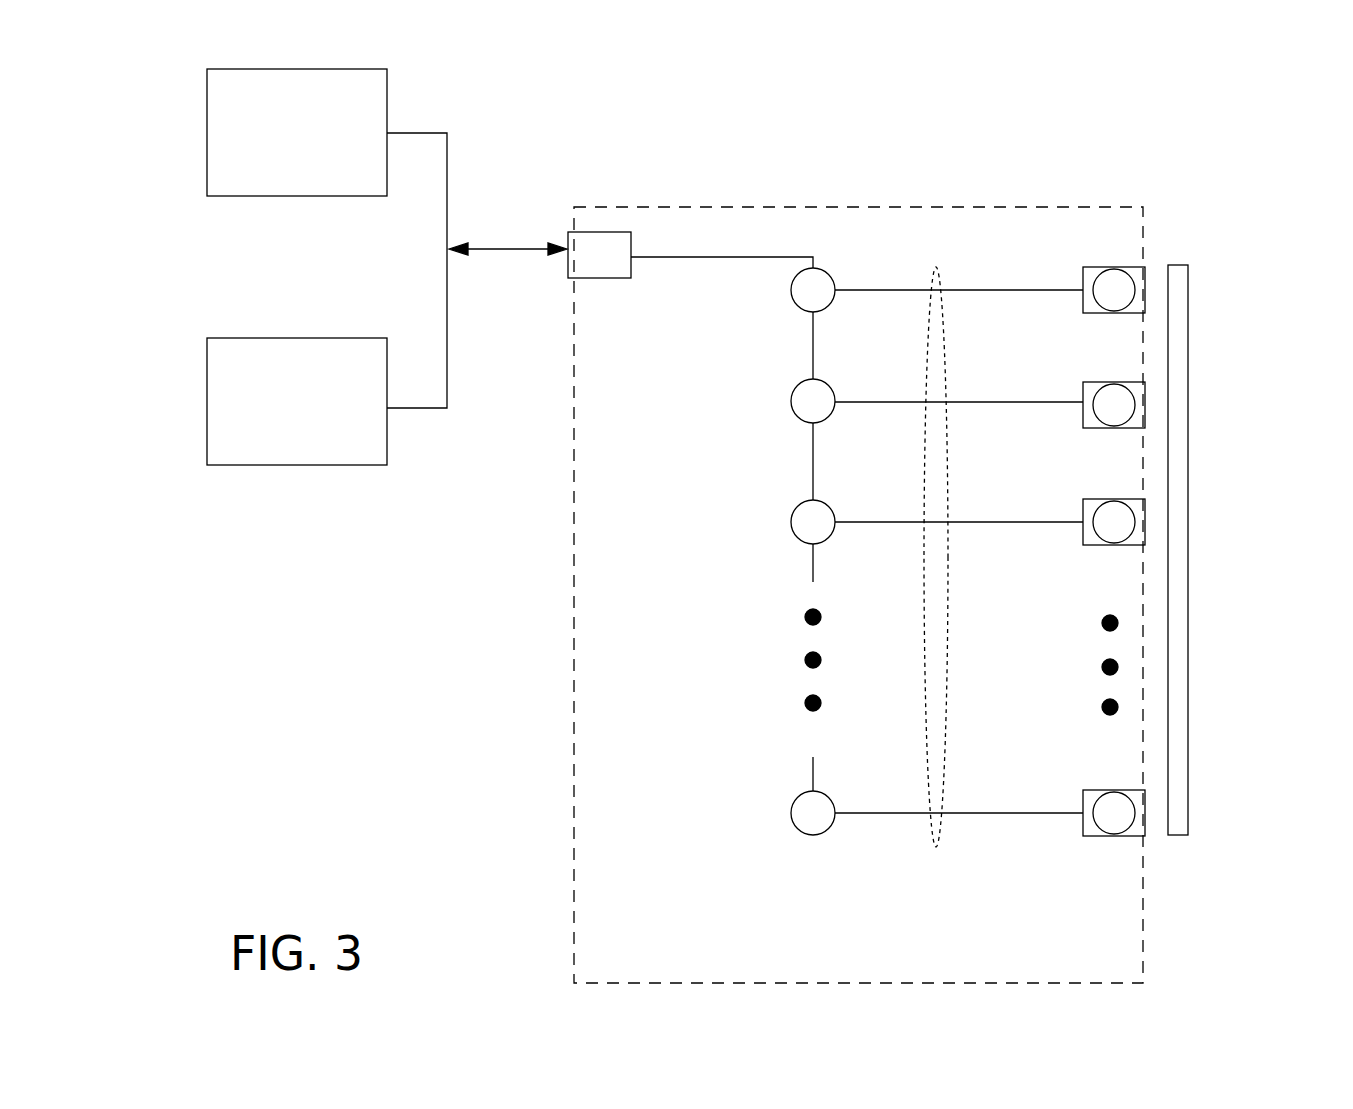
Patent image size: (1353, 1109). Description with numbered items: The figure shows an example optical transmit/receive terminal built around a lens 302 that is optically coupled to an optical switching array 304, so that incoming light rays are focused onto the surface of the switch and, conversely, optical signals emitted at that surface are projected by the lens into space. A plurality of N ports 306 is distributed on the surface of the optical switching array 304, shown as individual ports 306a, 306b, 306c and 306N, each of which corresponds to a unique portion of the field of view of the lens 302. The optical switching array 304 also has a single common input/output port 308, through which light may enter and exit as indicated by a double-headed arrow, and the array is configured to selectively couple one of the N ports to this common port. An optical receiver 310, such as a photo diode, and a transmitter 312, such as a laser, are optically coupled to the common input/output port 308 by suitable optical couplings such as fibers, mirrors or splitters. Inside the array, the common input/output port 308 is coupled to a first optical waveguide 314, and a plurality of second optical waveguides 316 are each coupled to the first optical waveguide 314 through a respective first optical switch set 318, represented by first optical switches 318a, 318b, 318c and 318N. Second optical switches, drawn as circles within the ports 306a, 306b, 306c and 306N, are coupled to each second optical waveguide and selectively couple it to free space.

The lens 302 is at (1182, 325).
The optical switching array 304 is at (915, 207).
The ports 306 is at (1110, 905).
The first port 306a is at (1085, 278).
The second port 306b is at (1083, 393).
The third port 306c is at (1082, 512).
The Nth port 306N is at (1083, 803).
The common input/output port 308 is at (578, 250).
The optical receiver 310 is at (225, 413).
The transmitter 312 is at (220, 133).
The first optical waveguide 314 is at (670, 257).
The second optical waveguides 316 is at (947, 585).
The first optical switch set 318 is at (815, 905).
The first optical switch 318a is at (792, 295).
The first optical switch 318b is at (822, 393).
The first optical switch 318c is at (793, 515).
The first optical switch 318N is at (790, 813).